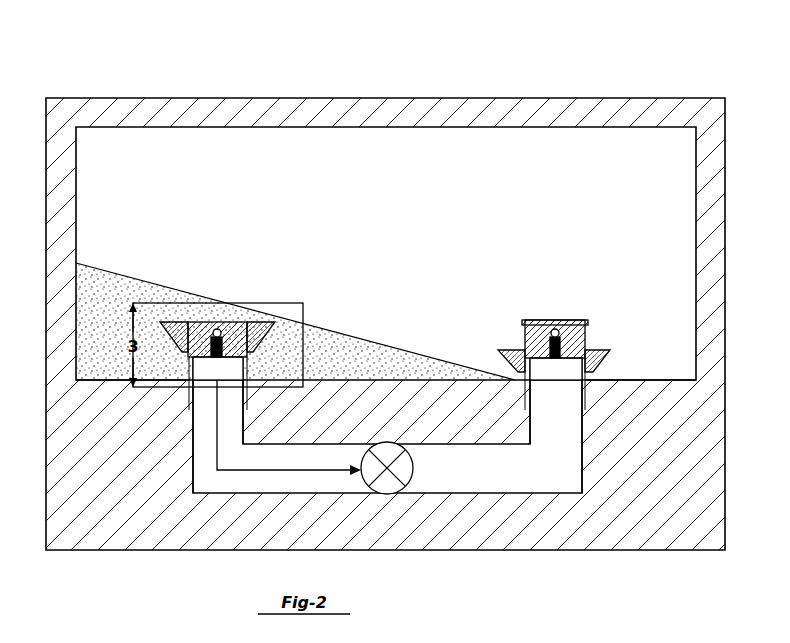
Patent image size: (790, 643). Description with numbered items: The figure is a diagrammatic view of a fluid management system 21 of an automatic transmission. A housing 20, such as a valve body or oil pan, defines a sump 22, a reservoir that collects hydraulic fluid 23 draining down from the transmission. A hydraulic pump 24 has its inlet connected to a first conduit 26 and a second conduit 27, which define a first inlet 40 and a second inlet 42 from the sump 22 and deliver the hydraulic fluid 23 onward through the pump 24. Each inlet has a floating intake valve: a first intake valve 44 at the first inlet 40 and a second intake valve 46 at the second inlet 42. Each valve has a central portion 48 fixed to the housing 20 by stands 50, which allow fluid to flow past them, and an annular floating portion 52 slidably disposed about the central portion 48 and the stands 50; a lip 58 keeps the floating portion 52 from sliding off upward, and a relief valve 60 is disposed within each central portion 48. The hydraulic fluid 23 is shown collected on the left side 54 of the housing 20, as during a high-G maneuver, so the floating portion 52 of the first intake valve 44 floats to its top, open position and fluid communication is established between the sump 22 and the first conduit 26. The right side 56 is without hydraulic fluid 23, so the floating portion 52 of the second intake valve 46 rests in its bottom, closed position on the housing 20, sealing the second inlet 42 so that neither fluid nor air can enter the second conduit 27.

The housing 20 is at (46, 123).
The fluid management system 21 is at (638, 70).
The sump 22 is at (393, 352).
The hydraulic fluid 23 is at (98, 285).
The hydraulic pump 24 is at (396, 482).
The first conduit 26 is at (220, 482).
The second conduit 27 is at (540, 482).
The first inlet 40 is at (237, 392).
The second inlet 42 is at (562, 391).
The first intake valve 44 is at (389, 328).
The second intake valve 46 is at (575, 310).
The central portion 48 is at (200, 330).
The stands 50 is at (188, 355).
The floating portion 52 is at (265, 320).
The left side 54 is at (102, 380).
The right side 56 is at (672, 380).
The lip 58 is at (180, 322).
The relief valve 60 is at (218, 311).